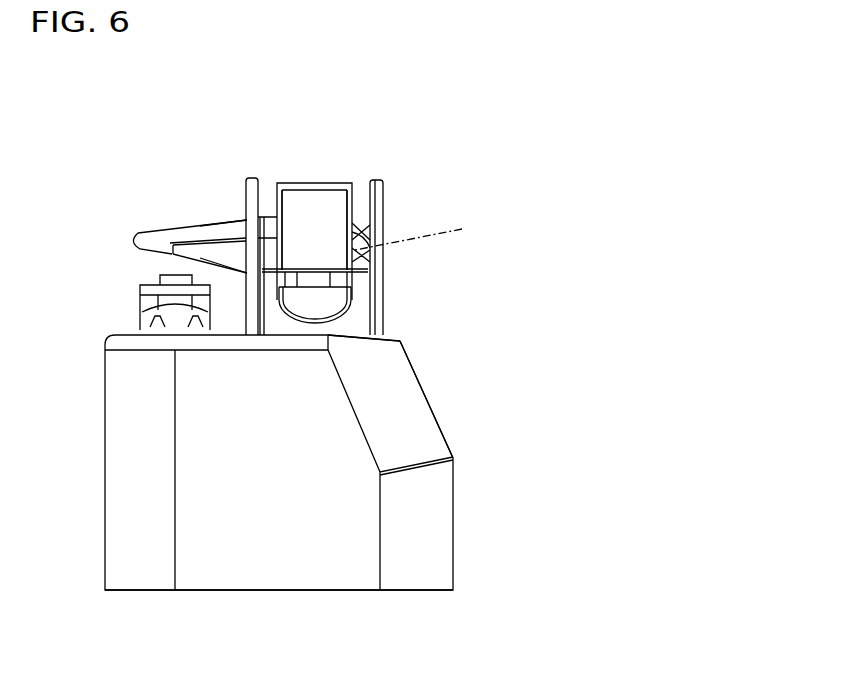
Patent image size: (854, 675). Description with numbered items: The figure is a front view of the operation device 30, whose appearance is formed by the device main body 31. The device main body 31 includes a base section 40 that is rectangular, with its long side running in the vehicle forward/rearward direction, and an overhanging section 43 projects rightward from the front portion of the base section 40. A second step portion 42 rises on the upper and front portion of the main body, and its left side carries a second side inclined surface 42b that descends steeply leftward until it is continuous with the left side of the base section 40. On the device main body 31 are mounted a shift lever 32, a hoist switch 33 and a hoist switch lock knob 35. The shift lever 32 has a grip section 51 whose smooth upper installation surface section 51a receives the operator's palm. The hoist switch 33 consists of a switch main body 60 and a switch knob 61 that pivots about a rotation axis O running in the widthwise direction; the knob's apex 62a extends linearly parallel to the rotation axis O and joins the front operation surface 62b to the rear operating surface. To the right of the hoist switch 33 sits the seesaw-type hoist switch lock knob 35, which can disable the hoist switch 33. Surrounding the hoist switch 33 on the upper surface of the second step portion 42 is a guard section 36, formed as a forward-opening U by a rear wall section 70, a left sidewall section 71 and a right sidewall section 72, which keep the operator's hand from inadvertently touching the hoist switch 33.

The operation device 30 is at (511, 80).
The device main body 31 is at (378, 606).
The shift lever 32 is at (162, 204).
The hoist switch 33 is at (355, 170).
The hoist switch lock knob 35 is at (158, 273).
The guard section 36 is at (402, 288).
The base section 40 is at (332, 555).
The second step portion 42 is at (365, 327).
The second side inclined surface 42b is at (424, 393).
The overhanging section 43 is at (105, 455).
The grip section 51 is at (167, 223).
The installation surface section 51a is at (225, 214).
The switch main body 60 is at (335, 322).
The switch knob 61 is at (350, 212).
The apex 62a is at (323, 178).
The front operation surface 62b is at (299, 220).
The rear wall section 70 is at (362, 280).
The left sidewall section 71 is at (380, 183).
The right sidewall section 72 is at (226, 243).
The rotation axis O is at (418, 235).